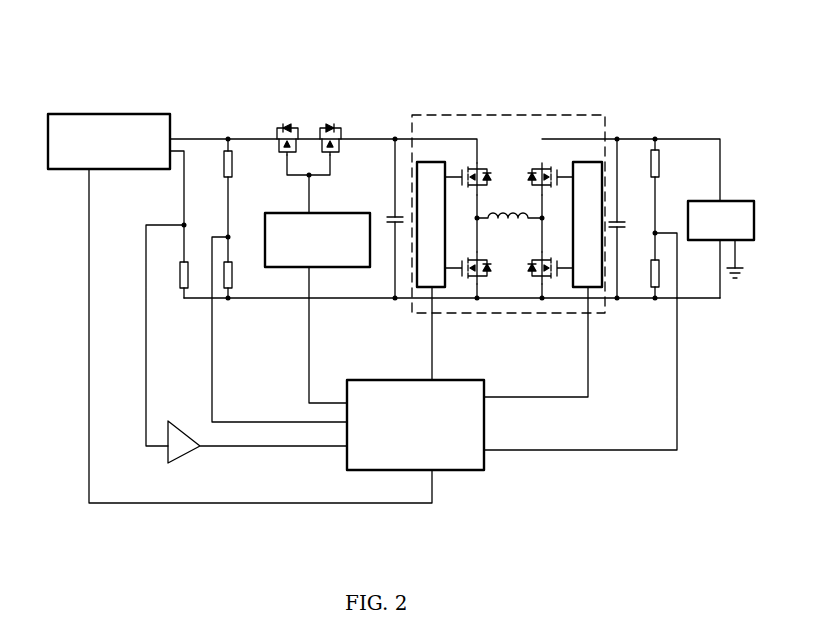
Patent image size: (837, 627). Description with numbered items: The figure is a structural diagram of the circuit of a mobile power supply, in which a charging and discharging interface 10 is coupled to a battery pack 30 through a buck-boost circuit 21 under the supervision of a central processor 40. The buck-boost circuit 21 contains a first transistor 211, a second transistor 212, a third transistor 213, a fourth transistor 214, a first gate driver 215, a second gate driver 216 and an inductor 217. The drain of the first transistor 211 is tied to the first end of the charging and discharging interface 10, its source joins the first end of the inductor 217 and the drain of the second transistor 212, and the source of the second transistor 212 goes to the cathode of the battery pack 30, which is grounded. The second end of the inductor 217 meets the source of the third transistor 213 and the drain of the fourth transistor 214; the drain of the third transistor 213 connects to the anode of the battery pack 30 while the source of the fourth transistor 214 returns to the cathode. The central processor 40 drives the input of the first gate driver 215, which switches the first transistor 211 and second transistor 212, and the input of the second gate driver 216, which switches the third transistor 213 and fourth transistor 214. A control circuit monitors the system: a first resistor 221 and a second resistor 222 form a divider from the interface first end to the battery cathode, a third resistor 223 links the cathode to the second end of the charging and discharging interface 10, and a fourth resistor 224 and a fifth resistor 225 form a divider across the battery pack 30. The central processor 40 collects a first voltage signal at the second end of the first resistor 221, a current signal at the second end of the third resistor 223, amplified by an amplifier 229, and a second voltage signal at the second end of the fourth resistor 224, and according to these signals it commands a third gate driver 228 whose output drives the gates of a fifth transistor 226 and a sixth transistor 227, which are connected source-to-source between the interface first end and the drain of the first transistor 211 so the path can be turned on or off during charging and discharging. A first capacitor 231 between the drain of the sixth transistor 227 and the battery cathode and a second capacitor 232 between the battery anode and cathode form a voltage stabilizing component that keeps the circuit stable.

The charging and discharging interface 10 is at (95, 114).
The buck-boost circuit 21 is at (523, 313).
The battery pack 30 is at (740, 201).
The central processor 40 is at (460, 470).
The first transistor 211 is at (478, 162).
The second transistor 212 is at (483, 278).
The third transistor 213 is at (542, 162).
The fourth transistor 214 is at (545, 275).
The first gate driver 215 is at (432, 158).
The second gate driver 216 is at (590, 162).
The inductor 217 is at (512, 213).
The first resistor 221 is at (229, 150).
The second resistor 222 is at (225, 287).
The third resistor 223 is at (182, 282).
The fourth resistor 224 is at (662, 162).
The fifth resistor 225 is at (677, 298).
The fifth transistor 226 is at (287, 127).
The sixth transistor 227 is at (330, 127).
The third gate driver 228 is at (352, 212).
The amplifier 229 is at (185, 452).
The first capacitor 231 is at (390, 225).
The second capacitor 232 is at (623, 229).